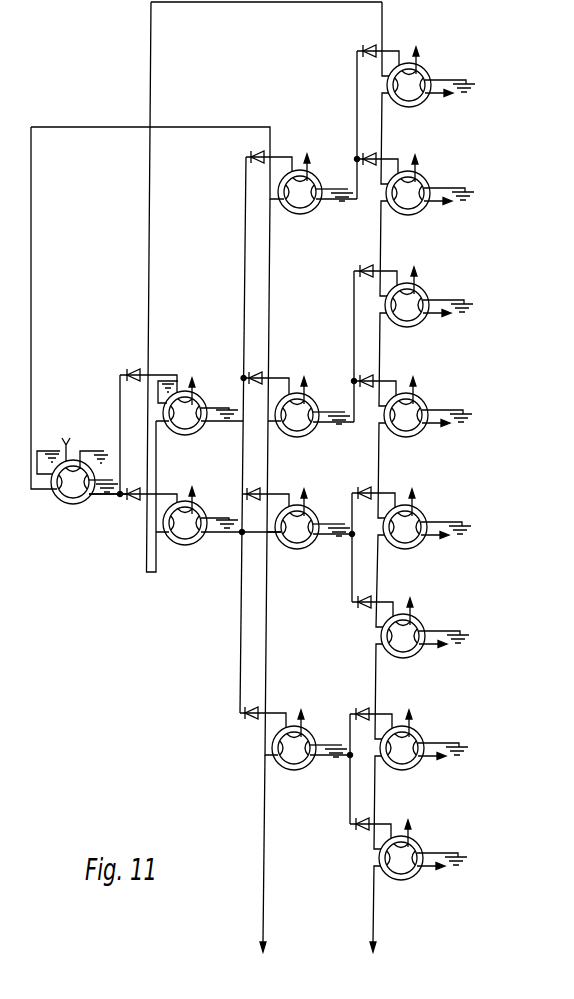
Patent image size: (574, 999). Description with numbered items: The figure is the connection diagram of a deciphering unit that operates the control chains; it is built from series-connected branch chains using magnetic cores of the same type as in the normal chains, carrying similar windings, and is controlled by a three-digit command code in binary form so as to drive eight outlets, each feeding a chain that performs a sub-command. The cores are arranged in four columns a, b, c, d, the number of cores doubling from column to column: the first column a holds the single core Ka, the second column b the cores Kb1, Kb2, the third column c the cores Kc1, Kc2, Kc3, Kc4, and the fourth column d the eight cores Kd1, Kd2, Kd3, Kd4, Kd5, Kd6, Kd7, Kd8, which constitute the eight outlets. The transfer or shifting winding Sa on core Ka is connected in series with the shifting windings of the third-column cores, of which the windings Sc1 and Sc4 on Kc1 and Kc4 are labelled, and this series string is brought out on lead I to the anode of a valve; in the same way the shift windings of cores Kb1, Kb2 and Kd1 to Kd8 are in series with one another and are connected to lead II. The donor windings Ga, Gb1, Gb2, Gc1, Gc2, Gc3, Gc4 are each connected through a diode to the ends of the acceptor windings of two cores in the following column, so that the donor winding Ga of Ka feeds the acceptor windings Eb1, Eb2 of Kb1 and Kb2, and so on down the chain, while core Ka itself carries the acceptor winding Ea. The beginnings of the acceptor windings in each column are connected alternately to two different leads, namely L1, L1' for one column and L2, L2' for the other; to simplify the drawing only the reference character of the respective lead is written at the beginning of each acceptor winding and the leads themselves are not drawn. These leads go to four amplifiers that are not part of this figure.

The core Ka is at (89, 500).
The core Kb1 is at (199, 423).
The core Kb2 is at (218, 537).
The core Kc1 is at (317, 201).
The core Kc2 is at (314, 424).
The core Kc3 is at (313, 541).
The core Kc4 is at (311, 759).
The core Kd1 is at (416, 85).
The core Kd2 is at (415, 193).
The core Kd3 is at (413, 305).
The core Kd4 is at (413, 415).
The core Kd5 is at (411, 527).
The core Kd6 is at (410, 636).
The core Kd7 is at (409, 748).
The core Kd8 is at (408, 858).
The transfer or shifting winding Sa is at (42, 324).
The transfer or shifting winding Sc1 is at (157, 168).
The transfer or shifting winding Sc4 is at (256, 482).
The donor winding Ga is at (105, 501).
The donor winding Gb1 is at (223, 402).
The donor winding Gb2 is at (222, 514).
The donor winding Gc1 is at (335, 182).
The donor winding Gc2 is at (333, 406).
The donor winding Gc3 is at (333, 518).
The donor winding Gc4 is at (330, 738).
The acceptor winding Ea is at (72, 445).
The acceptor winding Eb1 is at (184, 377).
The acceptor winding Eb2 is at (193, 481).
The lead L1 is at (307, 326).
The lead L1' is at (308, 548).
The lead L2 is at (310, 382).
The lead L2' is at (312, 491).
The lead I is at (253, 853).
The lead II is at (362, 930).
The column a is at (78, 813).
The column b is at (170, 815).
The column c is at (282, 928).
The column d is at (392, 926).